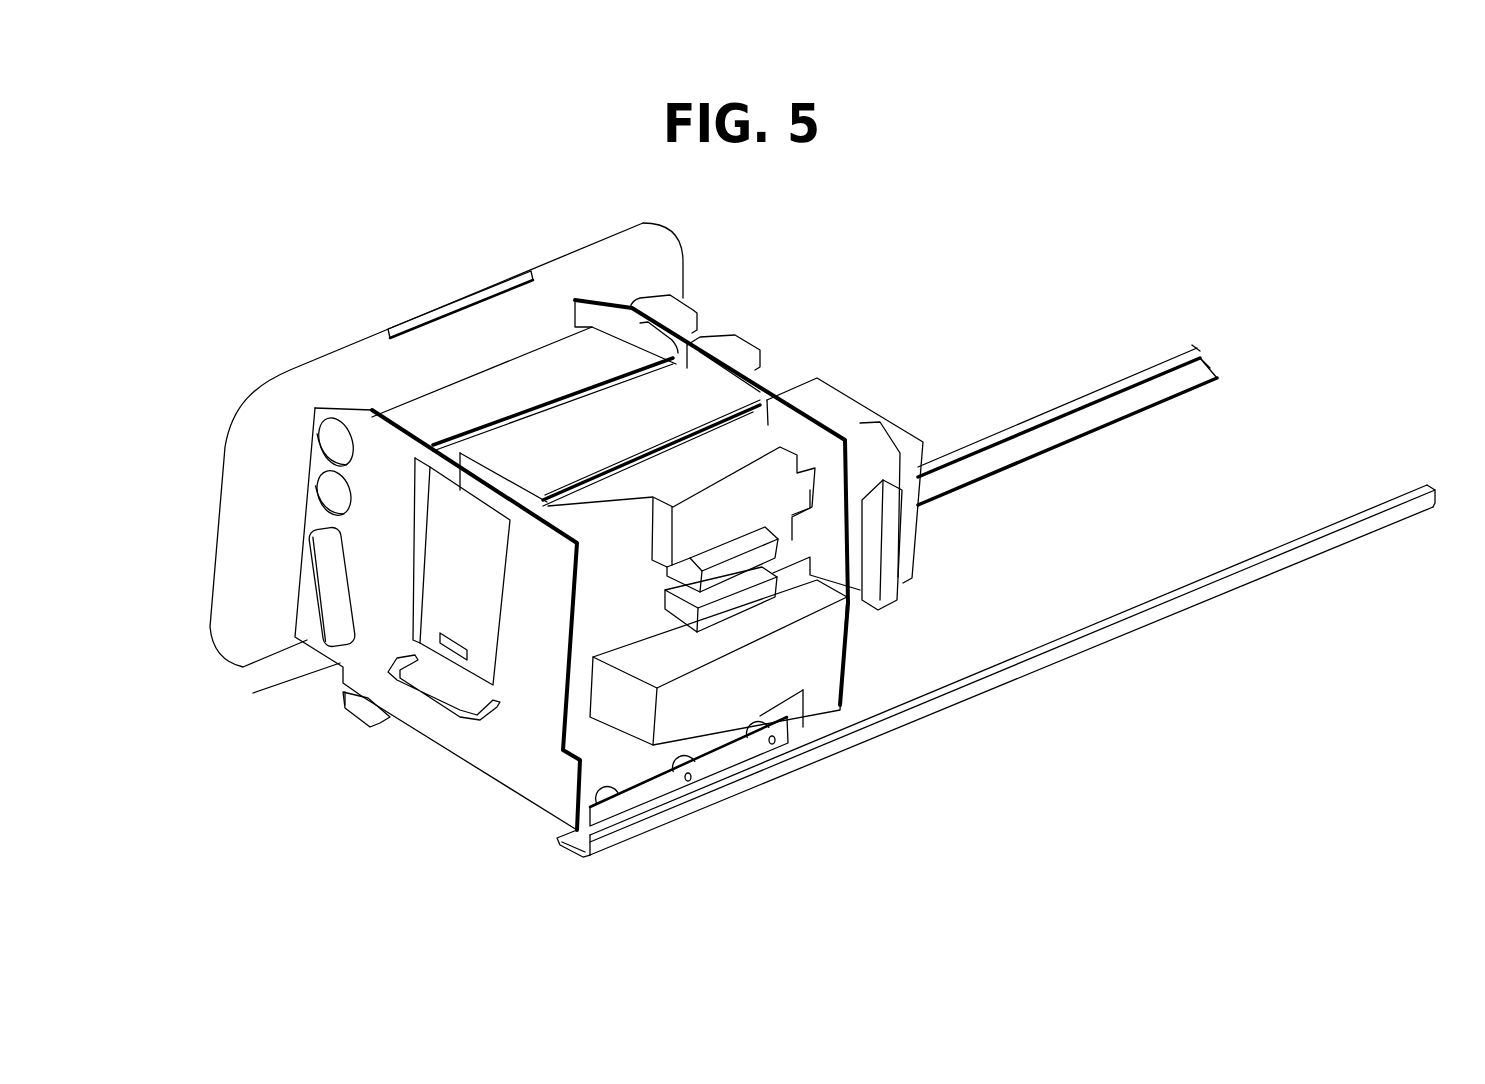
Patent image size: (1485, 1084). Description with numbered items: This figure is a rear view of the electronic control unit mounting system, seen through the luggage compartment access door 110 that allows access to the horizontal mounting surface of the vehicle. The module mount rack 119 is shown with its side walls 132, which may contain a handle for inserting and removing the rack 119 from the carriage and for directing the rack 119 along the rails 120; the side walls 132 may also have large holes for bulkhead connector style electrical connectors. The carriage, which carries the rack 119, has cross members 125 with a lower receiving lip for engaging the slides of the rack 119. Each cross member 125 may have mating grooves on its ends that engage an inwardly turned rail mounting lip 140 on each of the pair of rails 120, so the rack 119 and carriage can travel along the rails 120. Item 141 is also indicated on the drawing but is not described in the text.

The luggage compartment access door 110 is at (534, 259).
The module mount rack 119 is at (750, 340).
The rail 120 is at (1033, 413).
The carriage cross member 125 is at (738, 753).
The side wall 132 is at (453, 765).
The rail mounting lip 140 is at (1208, 363).
The rail tip 141 is at (1201, 346).